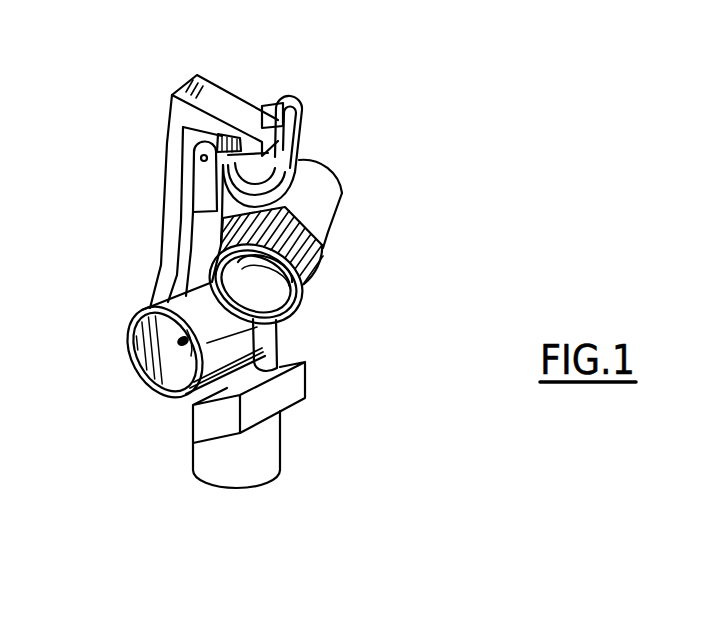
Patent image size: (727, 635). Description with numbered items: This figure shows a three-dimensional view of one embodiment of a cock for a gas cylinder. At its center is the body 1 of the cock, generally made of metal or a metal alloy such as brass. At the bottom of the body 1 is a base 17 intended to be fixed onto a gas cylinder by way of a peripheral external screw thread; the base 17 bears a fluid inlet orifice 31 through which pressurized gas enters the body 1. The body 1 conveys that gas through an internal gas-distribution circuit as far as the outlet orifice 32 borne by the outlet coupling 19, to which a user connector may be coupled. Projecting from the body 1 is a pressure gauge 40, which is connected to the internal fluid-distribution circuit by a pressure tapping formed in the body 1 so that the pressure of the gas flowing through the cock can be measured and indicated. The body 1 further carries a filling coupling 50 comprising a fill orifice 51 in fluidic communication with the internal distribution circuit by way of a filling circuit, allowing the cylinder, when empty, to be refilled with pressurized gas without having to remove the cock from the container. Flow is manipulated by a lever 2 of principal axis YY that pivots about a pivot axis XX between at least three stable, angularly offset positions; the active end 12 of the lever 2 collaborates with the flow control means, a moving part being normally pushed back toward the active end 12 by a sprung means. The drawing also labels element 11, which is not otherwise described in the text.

The body 1 is at (187, 262).
The lever 2 is at (165, 178).
The bracket leg 11 is at (161, 264).
The active end 12 is at (259, 102).
The base 17 is at (282, 443).
The outlet coupling 19 is at (316, 282).
The fluid inlet orifice 31 is at (240, 488).
The outlet orifice 32 is at (248, 292).
The pressure gauge 40 is at (123, 350).
The filling coupling 50 is at (342, 193).
The fill orifice 51 is at (328, 162).